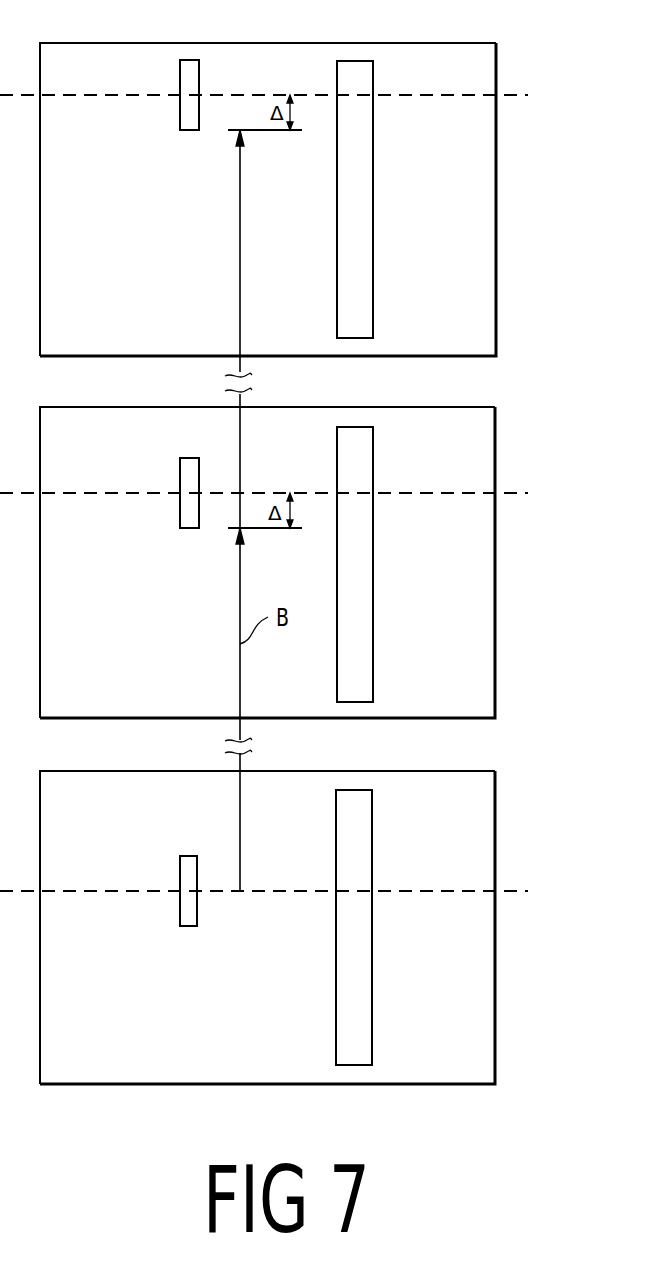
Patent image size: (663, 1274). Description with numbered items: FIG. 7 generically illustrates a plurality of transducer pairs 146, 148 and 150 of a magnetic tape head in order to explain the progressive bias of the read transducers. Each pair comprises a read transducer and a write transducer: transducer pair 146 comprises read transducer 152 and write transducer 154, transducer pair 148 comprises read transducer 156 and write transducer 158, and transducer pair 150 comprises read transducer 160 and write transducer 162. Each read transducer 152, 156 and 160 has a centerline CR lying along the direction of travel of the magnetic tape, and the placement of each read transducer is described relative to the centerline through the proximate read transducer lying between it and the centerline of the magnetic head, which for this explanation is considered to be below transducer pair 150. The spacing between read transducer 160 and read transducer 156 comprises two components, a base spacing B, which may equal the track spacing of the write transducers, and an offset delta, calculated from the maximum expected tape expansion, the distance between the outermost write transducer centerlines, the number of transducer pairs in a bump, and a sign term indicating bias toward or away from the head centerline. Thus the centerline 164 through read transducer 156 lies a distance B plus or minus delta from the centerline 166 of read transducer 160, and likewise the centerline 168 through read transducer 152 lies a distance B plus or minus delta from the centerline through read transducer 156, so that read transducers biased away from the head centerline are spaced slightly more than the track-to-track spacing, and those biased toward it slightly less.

The transducer pair 146 is at (455, 43).
The transducer pair 148 is at (475, 407).
The transducer pair 150 is at (497, 787).
The read transducer 152 is at (187, 60).
The write transducer 154 is at (352, 61).
The read transducer 156 is at (185, 458).
The write transducer 158 is at (357, 475).
The read transducer 160 is at (178, 875).
The write transducer 162 is at (351, 818).
The centerline 164 is at (535, 496).
The centerline 166 is at (535, 896).
The centerline 168 is at (535, 97).